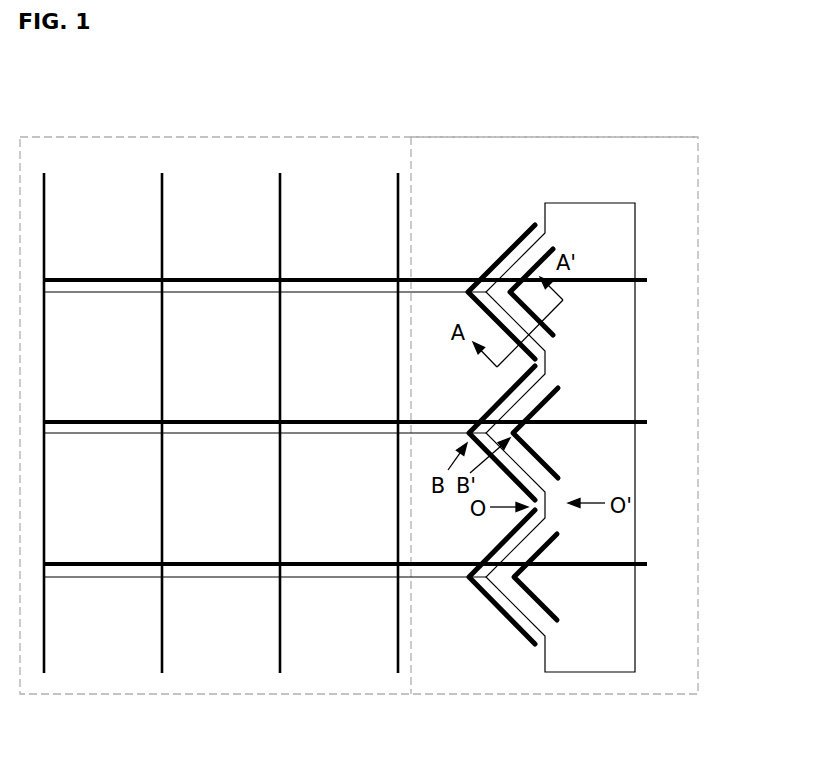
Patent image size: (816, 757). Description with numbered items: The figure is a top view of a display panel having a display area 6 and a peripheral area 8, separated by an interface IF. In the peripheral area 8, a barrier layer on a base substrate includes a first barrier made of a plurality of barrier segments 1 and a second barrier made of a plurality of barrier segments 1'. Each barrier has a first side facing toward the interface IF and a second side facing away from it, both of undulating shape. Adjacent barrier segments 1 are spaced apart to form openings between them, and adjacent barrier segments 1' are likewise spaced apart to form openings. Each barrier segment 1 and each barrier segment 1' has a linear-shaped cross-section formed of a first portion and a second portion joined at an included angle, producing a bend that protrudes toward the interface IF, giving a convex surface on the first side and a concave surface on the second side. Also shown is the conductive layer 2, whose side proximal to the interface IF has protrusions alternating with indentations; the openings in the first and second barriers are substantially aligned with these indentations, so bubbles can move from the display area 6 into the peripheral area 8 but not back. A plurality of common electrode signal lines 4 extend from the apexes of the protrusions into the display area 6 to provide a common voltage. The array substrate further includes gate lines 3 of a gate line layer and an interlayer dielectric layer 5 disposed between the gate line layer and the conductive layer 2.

The barrier segment of the first barrier 1 is at (487, 424).
The barrier segment of the second barrier 1' is at (559, 434).
The conductive layer 2 is at (622, 233).
The gate line 3 is at (645, 277).
The common electrode signal line 4 is at (337, 292).
The interlayer dielectric layer 5 is at (399, 183).
The display area 6 is at (318, 137).
The peripheral area 8 is at (613, 137).
The interface IF is at (411, 137).